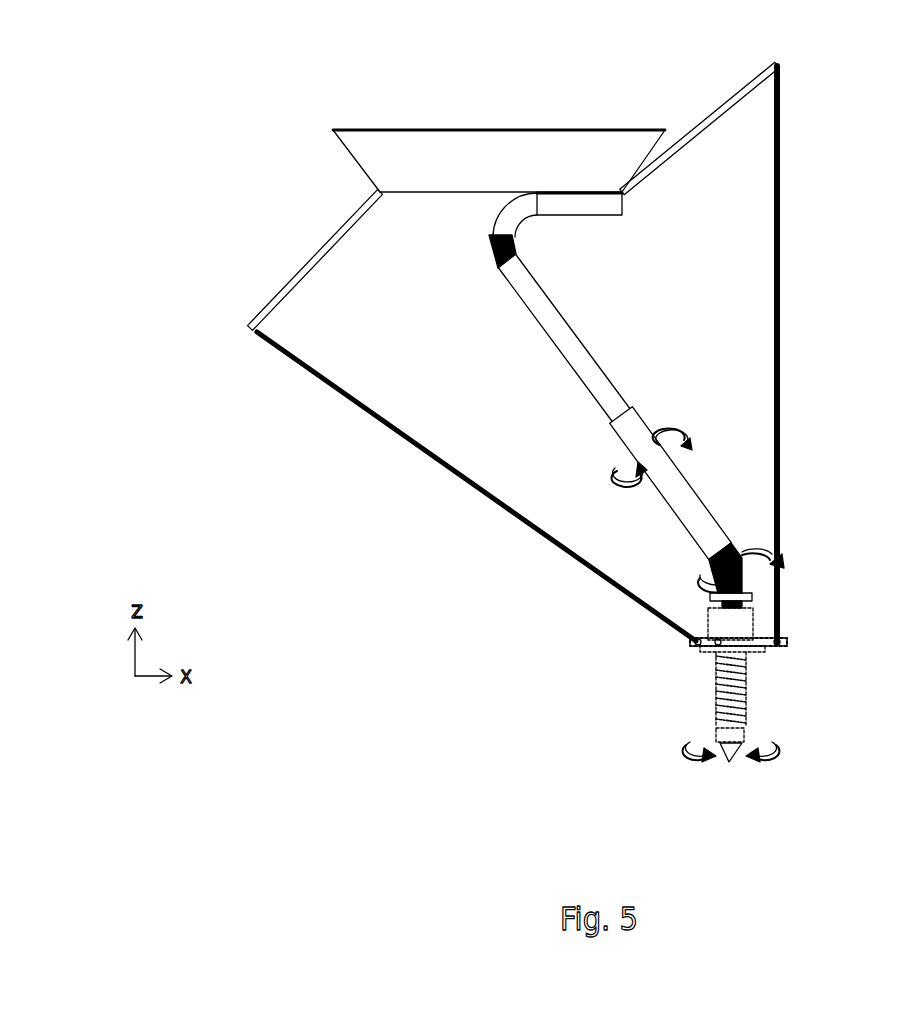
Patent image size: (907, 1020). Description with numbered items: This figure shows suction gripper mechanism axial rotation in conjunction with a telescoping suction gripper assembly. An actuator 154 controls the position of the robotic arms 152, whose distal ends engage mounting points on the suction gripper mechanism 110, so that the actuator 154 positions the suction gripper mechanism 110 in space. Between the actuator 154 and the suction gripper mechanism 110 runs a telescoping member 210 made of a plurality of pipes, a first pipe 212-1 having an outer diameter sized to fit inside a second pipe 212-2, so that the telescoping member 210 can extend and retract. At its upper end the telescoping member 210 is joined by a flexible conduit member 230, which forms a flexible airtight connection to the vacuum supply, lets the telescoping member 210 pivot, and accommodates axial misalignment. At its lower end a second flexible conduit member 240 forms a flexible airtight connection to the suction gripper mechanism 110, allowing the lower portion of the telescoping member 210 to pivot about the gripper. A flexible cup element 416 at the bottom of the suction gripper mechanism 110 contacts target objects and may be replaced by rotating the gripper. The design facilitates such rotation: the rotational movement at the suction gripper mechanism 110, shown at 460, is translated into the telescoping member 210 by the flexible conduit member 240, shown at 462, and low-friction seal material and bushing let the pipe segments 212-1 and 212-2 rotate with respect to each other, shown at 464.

The actuator 154 is at (574, 130).
The arms 152 is at (290, 368).
The flexible conduit member 230 is at (490, 248).
The telescoping member 210 is at (632, 407).
The first pipe 212-1 is at (540, 278).
The second pipe 212-2 is at (704, 504).
The rotation of pipe segments 464 is at (594, 466).
The rotation translated by flexible conduit member 462 is at (678, 568).
The lower flexible conduit member 240 is at (784, 550).
The suction gripper mechanism 110 is at (718, 702).
The flexible cup element 416 is at (734, 757).
The rotational movement at suction gripper mechanism 460 is at (652, 746).